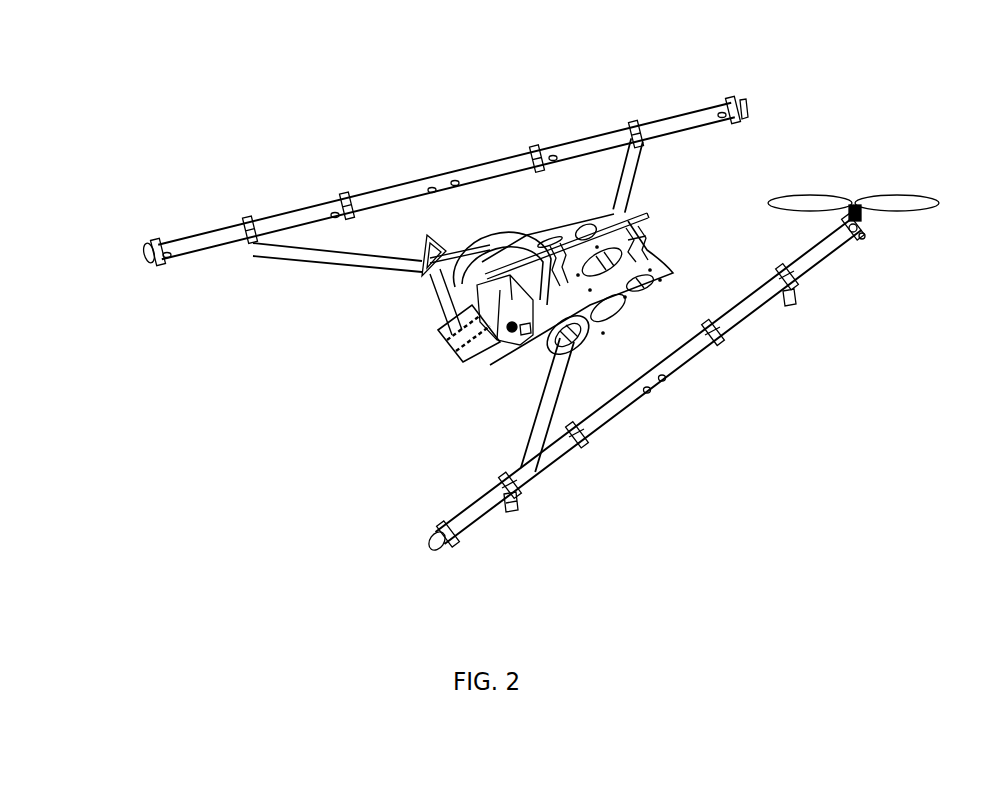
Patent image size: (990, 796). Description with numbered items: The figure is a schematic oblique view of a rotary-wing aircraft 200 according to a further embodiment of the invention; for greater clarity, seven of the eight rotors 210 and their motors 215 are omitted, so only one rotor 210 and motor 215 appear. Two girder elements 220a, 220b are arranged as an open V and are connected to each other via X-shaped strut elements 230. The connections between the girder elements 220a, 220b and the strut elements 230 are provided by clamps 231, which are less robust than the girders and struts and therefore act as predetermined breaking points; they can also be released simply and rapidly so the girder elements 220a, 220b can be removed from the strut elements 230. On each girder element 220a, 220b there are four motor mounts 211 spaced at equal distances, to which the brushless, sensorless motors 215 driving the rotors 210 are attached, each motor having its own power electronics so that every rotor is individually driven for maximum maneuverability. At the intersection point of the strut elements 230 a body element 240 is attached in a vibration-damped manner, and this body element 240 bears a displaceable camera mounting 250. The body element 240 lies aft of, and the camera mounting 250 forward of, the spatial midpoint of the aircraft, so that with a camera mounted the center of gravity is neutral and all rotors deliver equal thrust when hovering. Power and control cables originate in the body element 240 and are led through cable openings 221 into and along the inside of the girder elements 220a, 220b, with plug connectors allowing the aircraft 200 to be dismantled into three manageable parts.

The unmanned aerial vehicle frame assembly 200 is at (745, 444).
The rotor 210 is at (817, 195).
The motor mount 211 is at (120, 206).
The motor 215 is at (863, 218).
The girder element 220a is at (680, 357).
The girder element 220b is at (597, 140).
The cable opening 221 is at (430, 188).
The strut element 230 is at (533, 440).
The clamp 231 is at (516, 508).
The body element 240 is at (558, 344).
The camera mounting 250 is at (445, 336).